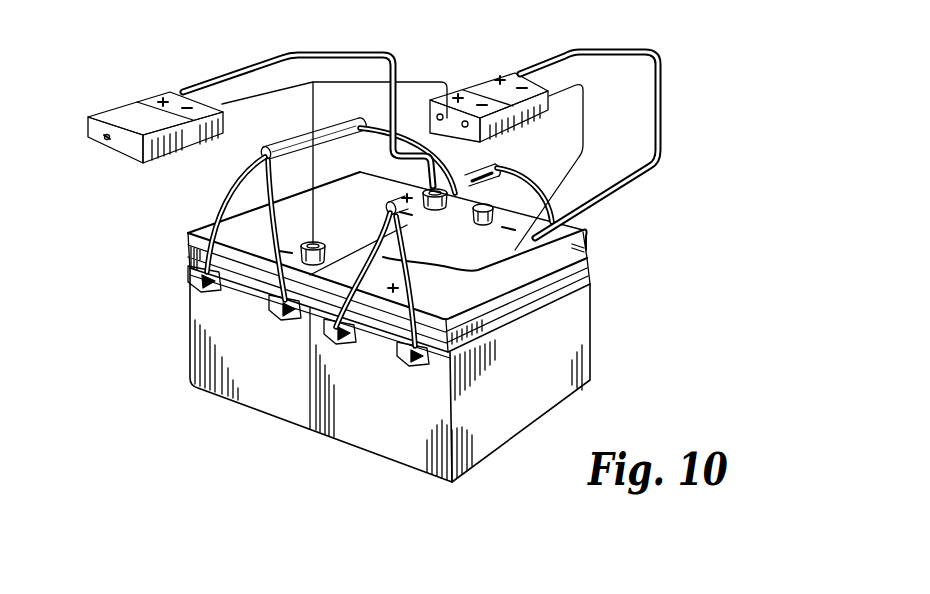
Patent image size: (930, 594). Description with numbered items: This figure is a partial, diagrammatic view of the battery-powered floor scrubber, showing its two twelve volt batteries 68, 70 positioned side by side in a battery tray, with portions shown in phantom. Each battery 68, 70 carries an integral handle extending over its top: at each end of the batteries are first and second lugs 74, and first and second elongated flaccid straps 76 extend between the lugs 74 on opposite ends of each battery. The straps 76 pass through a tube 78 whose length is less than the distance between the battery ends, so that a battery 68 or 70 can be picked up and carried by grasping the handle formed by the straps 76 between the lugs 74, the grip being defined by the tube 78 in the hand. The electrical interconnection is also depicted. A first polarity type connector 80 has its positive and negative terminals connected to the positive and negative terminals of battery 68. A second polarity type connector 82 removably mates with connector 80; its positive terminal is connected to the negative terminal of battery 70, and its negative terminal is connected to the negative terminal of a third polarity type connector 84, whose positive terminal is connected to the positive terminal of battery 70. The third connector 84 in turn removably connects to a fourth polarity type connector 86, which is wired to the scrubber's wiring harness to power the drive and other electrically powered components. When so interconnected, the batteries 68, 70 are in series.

The first twelve volt battery 68 is at (578, 322).
The second twelve volt battery 70 is at (212, 362).
The lugs 74 is at (205, 292).
The elongated flaccid straps 76 is at (387, 130).
The tube 78 is at (320, 134).
The first polarity type connector 80 is at (498, 73).
The second polarity type connector 82 is at (458, 93).
The third polarity type connector 84 is at (152, 93).
The fourth polarity type connector 86 is at (105, 139).